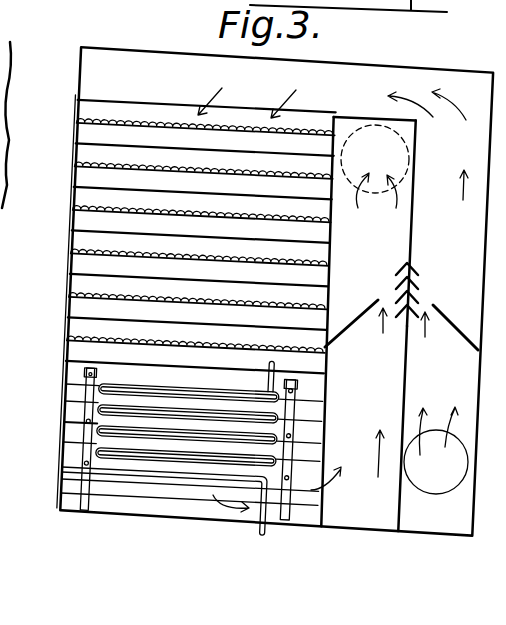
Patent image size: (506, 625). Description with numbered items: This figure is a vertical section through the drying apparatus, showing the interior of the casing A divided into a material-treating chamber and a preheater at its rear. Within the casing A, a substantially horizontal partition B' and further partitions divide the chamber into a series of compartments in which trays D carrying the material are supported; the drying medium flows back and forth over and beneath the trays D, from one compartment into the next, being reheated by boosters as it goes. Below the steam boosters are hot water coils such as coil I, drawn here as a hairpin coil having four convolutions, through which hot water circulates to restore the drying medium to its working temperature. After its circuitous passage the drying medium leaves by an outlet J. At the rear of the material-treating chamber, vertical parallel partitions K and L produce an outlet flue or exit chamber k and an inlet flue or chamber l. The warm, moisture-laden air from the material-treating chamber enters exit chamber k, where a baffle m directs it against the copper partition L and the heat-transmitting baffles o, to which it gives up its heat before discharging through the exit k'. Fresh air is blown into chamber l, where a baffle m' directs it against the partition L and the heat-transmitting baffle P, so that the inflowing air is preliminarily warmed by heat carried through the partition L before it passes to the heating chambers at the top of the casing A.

The casing A is at (378, 72).
The inlet flue or chamber l is at (465, 88).
The exit k' is at (397, 166).
The horizontal partition B' is at (180, 236).
The trays D is at (112, 250).
The hot water coil I is at (130, 385).
The vertical partition K is at (322, 402).
The outlet J is at (313, 513).
The outlet flue or chamber k is at (347, 321).
The heat-transmitting baffle P is at (416, 268).
The vertical partition L is at (404, 383).
The heat-transmitting baffle o is at (403, 266).
The baffle m is at (356, 328).
The baffle m' is at (449, 339).
The fan i' is at (436, 450).